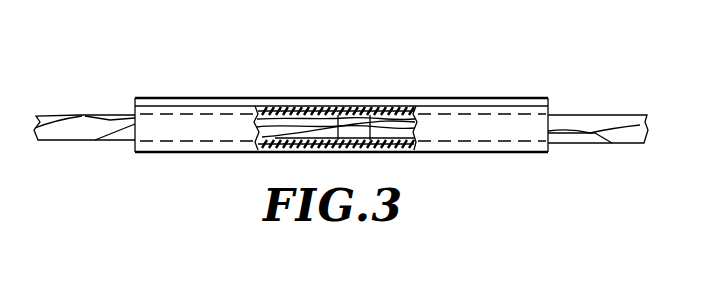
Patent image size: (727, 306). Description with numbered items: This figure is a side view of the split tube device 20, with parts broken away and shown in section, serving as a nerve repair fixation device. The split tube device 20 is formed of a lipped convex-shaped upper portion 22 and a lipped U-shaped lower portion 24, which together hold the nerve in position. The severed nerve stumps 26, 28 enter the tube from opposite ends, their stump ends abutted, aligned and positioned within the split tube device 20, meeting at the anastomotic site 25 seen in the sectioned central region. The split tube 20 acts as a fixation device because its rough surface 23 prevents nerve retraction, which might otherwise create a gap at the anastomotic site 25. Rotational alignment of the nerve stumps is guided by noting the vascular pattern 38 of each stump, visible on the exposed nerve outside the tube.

The split tube device 20 is at (465, 90).
The lipped convex-shaped upper portion 22 is at (527, 102).
The rough surface 23 is at (372, 140).
The lipped U-shaped lower portion 24 is at (508, 153).
The anastomotic site 25 is at (333, 118).
The severed nerve stump 26 is at (611, 146).
The severed nerve stump 28 is at (66, 120).
The vascular pattern 38 is at (623, 120).